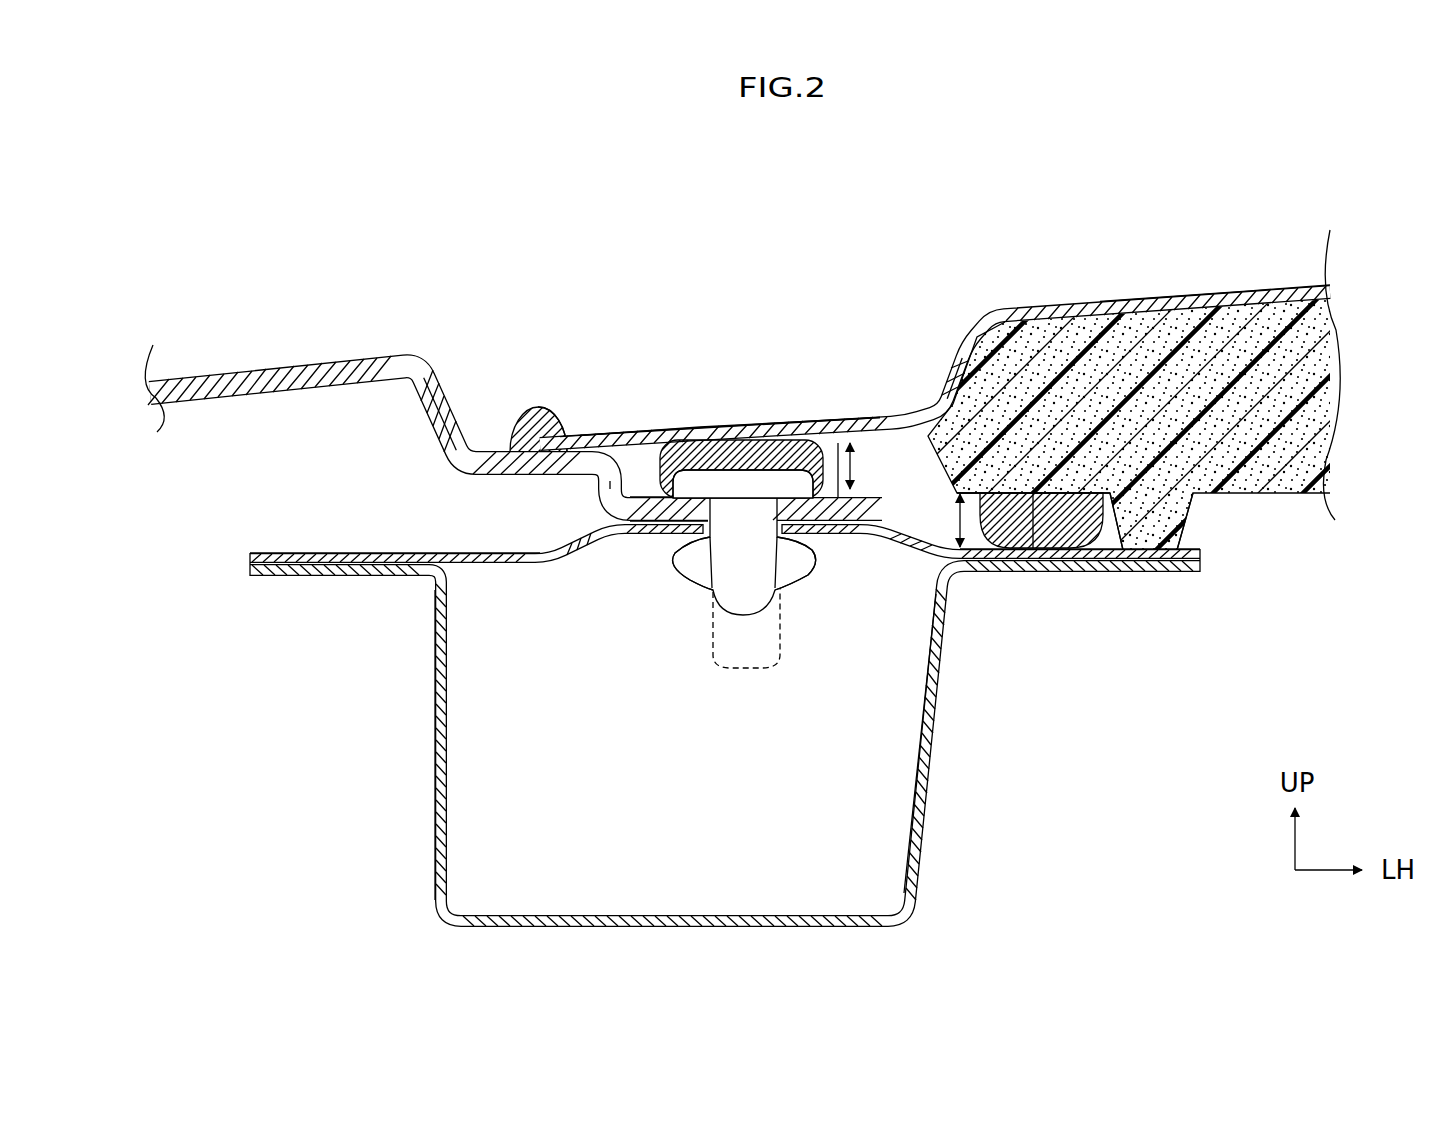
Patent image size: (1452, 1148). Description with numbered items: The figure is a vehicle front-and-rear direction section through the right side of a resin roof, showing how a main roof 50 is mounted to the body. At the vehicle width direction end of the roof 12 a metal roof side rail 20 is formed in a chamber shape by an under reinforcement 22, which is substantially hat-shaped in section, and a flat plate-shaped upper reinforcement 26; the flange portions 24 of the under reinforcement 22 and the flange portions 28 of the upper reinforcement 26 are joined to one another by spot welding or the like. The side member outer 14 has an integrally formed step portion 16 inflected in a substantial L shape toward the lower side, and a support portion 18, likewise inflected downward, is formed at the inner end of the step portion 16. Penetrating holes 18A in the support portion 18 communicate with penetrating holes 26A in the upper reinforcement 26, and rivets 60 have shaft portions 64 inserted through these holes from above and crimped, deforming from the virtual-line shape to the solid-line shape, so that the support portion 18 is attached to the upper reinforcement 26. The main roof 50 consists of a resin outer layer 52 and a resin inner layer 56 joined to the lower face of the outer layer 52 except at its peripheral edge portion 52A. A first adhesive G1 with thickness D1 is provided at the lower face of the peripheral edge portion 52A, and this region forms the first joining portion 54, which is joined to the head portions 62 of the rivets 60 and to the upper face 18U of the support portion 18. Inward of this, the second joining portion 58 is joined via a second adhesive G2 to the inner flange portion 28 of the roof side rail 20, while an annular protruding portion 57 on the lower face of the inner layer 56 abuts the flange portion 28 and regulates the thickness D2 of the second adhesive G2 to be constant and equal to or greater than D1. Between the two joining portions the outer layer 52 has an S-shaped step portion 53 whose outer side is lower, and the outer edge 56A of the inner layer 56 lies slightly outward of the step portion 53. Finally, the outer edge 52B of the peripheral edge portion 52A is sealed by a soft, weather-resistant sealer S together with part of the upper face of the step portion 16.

The roof 12 is at (1166, 291).
The side member outer panel 14 is at (266, 362).
The step portion 16 is at (500, 448).
The support portion 18 is at (887, 530).
The penetrating holes 18A is at (777, 430).
The upper face 18U is at (655, 432).
The roof side rail 20 is at (430, 781).
The under reinforcement 22 is at (929, 790).
The flange portions 24 is at (248, 574).
The upper reinforcement 26 is at (532, 564).
The penetrating holes 26A is at (715, 590).
The flange portions 28 is at (248, 554).
The main roof 50 is at (1272, 287).
The outer layer 52 is at (1001, 307).
The peripheral edge portion 52A is at (600, 432).
The outer edge 52B is at (522, 406).
The step portion 53 is at (934, 405).
The first joining portion 54 is at (763, 440).
The inner layer 56 is at (1336, 398).
The outer edge 56A is at (932, 440).
The protruding portion 57 is at (1137, 543).
The second joining portion 58 is at (1040, 550).
The rivets 60 is at (806, 583).
The head portions 62 is at (740, 483).
The shaft portions 64 is at (757, 603).
The sealer S is at (551, 411).
The first adhesive G1 is at (839, 430).
The second adhesive G2 is at (992, 576).
The thickness of first adhesive D1 is at (857, 440).
The thickness of second adhesive D2 is at (951, 566).